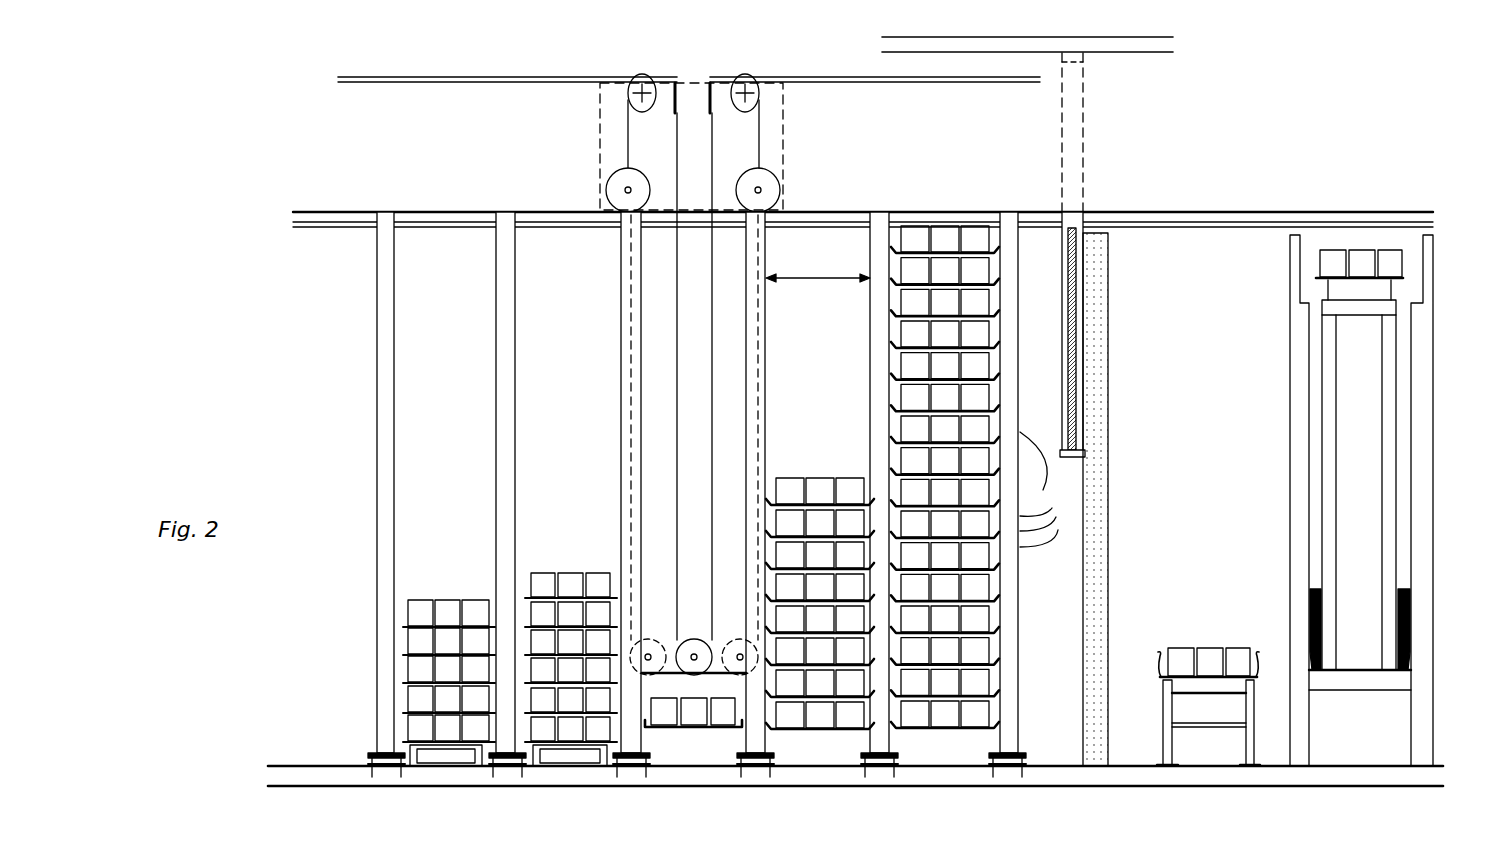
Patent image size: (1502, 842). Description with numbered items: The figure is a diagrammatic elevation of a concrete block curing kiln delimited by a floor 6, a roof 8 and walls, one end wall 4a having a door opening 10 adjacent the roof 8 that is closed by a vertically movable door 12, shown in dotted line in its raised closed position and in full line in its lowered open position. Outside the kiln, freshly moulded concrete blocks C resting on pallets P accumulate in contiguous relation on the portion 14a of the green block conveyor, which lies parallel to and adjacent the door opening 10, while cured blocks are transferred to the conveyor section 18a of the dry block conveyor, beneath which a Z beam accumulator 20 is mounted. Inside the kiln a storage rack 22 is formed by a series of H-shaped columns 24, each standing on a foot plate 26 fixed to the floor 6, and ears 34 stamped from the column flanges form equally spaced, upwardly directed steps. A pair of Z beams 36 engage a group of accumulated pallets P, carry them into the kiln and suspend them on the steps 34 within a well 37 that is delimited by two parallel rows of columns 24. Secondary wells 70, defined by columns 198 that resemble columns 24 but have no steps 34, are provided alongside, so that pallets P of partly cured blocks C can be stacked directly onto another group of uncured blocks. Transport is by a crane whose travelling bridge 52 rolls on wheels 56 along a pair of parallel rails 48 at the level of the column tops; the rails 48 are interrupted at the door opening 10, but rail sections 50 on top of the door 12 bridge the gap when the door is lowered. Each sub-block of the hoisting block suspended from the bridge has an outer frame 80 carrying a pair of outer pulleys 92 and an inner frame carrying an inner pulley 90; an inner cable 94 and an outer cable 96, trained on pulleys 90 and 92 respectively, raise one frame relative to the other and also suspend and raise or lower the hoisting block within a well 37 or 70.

The floor 6 is at (824, 776).
The roof 8 is at (1142, 43).
The door opening 10 is at (1097, 230).
The door 12 is at (1086, 144).
The portion of the green block conveyor 14a is at (1210, 698).
The conveyor section of dry block conveyor 18a is at (1350, 292).
The Z beam accumulator 20 is at (1445, 441).
The storage rack 22 is at (855, 278).
The columns 24 is at (1006, 225).
The foot plate 26 is at (650, 756).
The ears 34 is at (1040, 489).
The Z beams 36 is at (1307, 626).
The well 37 is at (816, 457).
The rails 48 is at (1240, 212).
The rail sections 50 is at (1074, 218).
The travelling bridge 52 is at (786, 141).
The wheels 56 is at (782, 192).
The secondary wells 70 is at (450, 468).
The outer frame 80 is at (1390, 529).
The inner pulley 90 is at (680, 645).
The outer pulleys 92 is at (733, 690).
The inner cable 94 is at (680, 430).
The outer cable 96 is at (762, 312).
The columns 198 is at (500, 354).
The end wall 4a is at (1108, 526).
The concrete blocks C is at (473, 603).
The pallets P is at (417, 677).